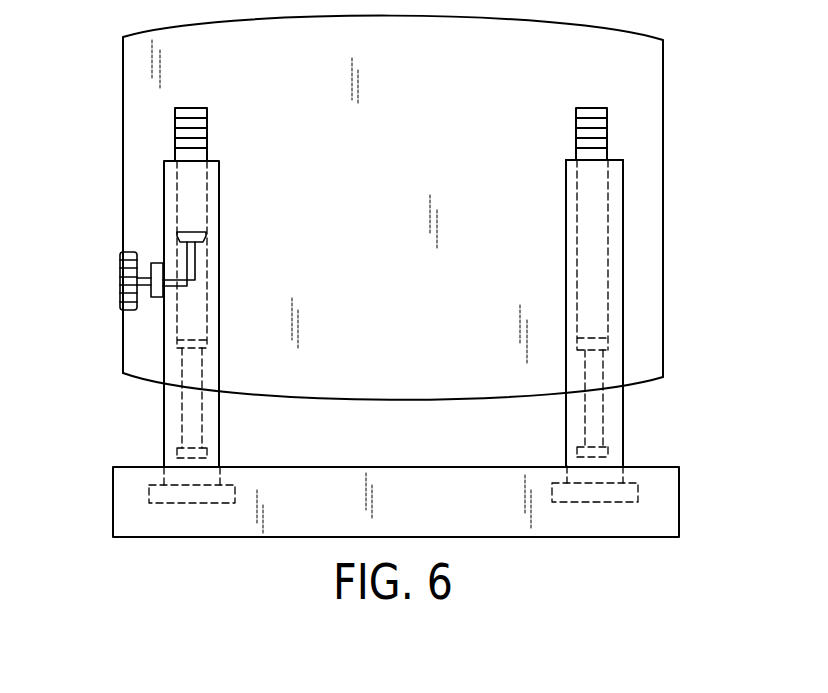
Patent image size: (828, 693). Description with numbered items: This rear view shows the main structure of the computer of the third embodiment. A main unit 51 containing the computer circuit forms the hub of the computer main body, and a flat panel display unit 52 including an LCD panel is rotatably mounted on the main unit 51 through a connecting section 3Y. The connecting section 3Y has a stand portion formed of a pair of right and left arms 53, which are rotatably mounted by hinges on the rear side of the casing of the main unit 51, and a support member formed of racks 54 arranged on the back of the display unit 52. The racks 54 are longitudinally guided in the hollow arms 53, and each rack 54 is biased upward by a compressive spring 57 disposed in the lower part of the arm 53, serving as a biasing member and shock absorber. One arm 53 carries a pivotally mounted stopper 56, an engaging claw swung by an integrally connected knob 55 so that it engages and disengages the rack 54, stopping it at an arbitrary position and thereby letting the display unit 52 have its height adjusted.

The connecting section 3Y is at (226, 188).
The main unit 51 is at (679, 498).
The flat panel display unit 52 is at (663, 122).
The arms 53 is at (622, 262).
The racks 54 is at (175, 119).
The knob 55 is at (120, 270).
The stopper 56 is at (200, 231).
The compressive spring 57 is at (192, 409).